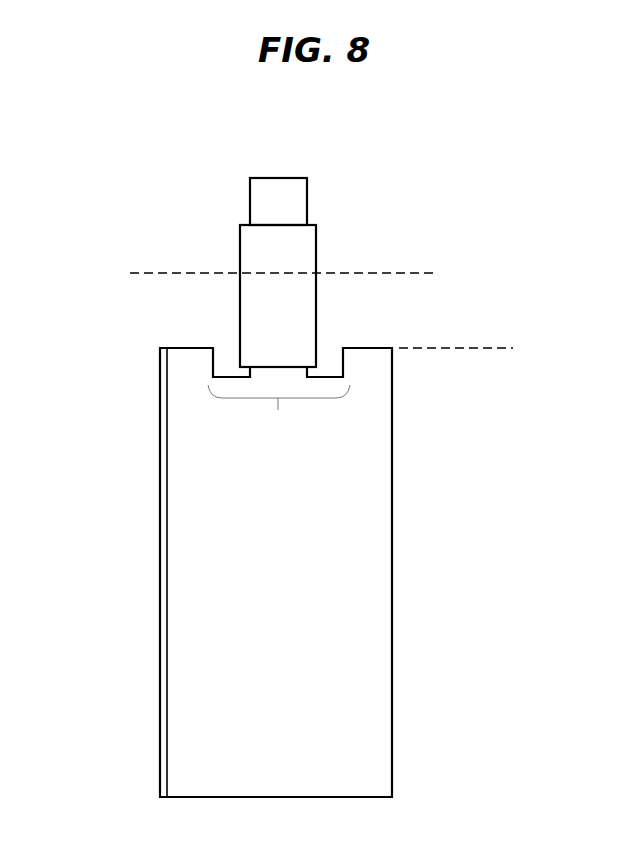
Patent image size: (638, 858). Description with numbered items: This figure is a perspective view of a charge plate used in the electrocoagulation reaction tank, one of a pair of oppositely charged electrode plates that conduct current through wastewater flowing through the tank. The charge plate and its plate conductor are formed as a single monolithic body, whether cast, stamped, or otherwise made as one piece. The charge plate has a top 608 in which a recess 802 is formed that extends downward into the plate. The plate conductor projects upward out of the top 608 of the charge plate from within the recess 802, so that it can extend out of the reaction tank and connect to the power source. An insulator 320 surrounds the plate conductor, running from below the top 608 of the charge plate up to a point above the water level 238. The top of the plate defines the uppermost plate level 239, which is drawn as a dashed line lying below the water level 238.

The insulator 320 is at (316, 245).
The water level 238 is at (408, 273).
The uppermost plate level 239 is at (467, 348).
The recess 802 is at (279, 411).
The top 608 is at (185, 348).